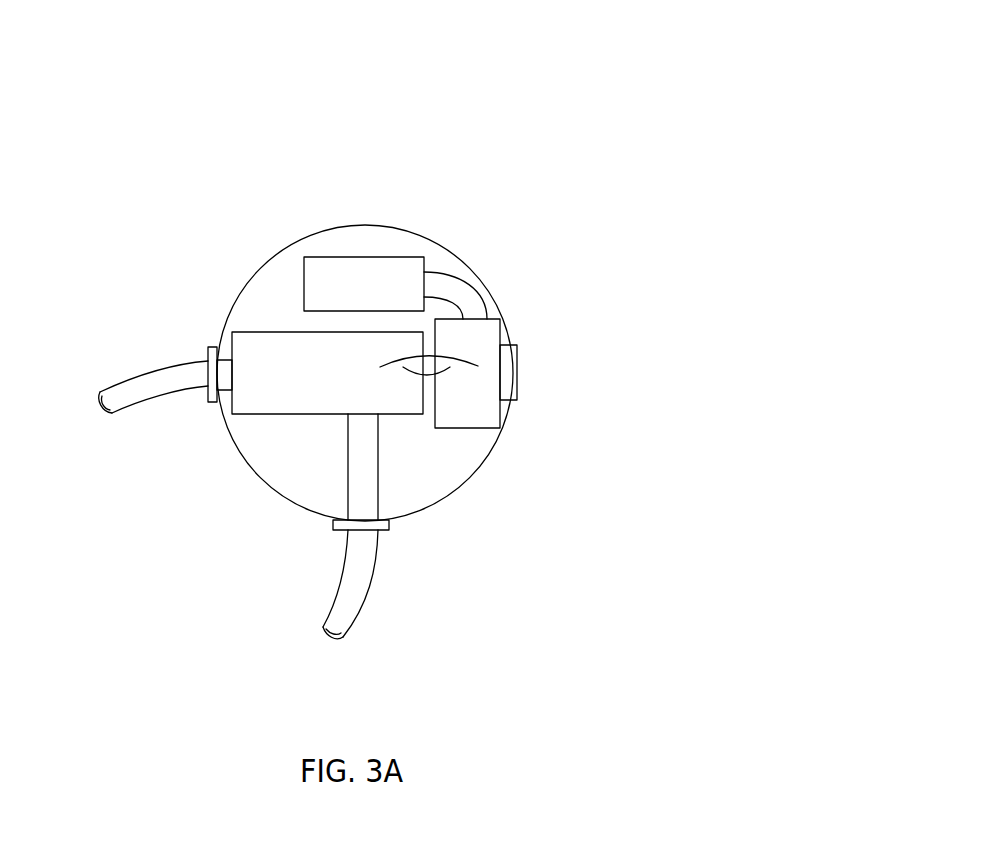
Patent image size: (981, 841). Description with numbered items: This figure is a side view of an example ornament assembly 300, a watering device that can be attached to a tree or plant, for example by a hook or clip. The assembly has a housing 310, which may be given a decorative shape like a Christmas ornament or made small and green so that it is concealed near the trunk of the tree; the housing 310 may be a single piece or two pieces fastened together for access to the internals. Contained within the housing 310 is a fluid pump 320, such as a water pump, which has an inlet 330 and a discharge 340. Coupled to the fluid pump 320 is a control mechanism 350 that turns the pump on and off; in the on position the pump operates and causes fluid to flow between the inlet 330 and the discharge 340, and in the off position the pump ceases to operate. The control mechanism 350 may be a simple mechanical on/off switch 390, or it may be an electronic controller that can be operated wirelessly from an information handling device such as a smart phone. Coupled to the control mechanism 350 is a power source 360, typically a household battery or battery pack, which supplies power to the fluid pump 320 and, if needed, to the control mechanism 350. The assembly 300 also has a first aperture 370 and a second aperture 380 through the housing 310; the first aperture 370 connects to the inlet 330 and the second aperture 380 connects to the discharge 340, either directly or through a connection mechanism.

The ornament assembly 300 is at (547, 88).
The housing 310 is at (455, 253).
The fluid pump 320 is at (281, 347).
The inlet 330 is at (223, 402).
The discharge 340 is at (377, 467).
The control mechanism 350 is at (462, 410).
The power source 360 is at (362, 282).
The first aperture 370 is at (208, 350).
The second aperture 380 is at (372, 527).
The mechanical on/off switch 390 is at (517, 358).